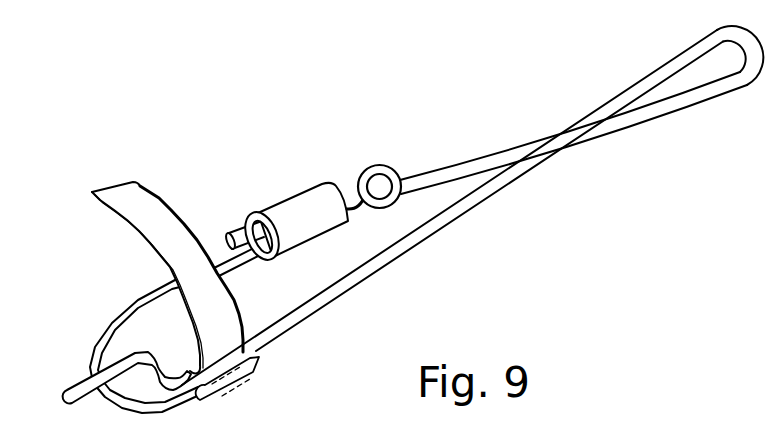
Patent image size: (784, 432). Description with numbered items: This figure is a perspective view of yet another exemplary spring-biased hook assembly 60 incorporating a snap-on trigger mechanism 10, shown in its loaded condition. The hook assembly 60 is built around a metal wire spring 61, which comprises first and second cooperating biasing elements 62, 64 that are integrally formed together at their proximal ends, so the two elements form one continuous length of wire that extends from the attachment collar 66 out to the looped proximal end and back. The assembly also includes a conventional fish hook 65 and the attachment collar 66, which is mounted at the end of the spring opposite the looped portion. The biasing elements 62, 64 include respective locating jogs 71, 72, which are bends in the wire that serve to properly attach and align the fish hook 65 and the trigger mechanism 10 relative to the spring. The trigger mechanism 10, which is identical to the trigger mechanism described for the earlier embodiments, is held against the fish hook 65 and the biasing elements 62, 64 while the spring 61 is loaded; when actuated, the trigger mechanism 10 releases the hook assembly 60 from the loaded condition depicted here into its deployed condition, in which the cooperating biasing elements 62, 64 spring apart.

The trigger mechanism 10 is at (188, 200).
The spring-biased hook assembly 60 is at (50, 299).
The metal wire spring 61 is at (642, 137).
The first biasing element 62 is at (470, 212).
The second biasing element 64 is at (538, 146).
The fish hook 65 is at (136, 306).
The attachment collar 66 is at (293, 198).
The locating jog 71 is at (155, 367).
The locating jog 72 is at (364, 183).